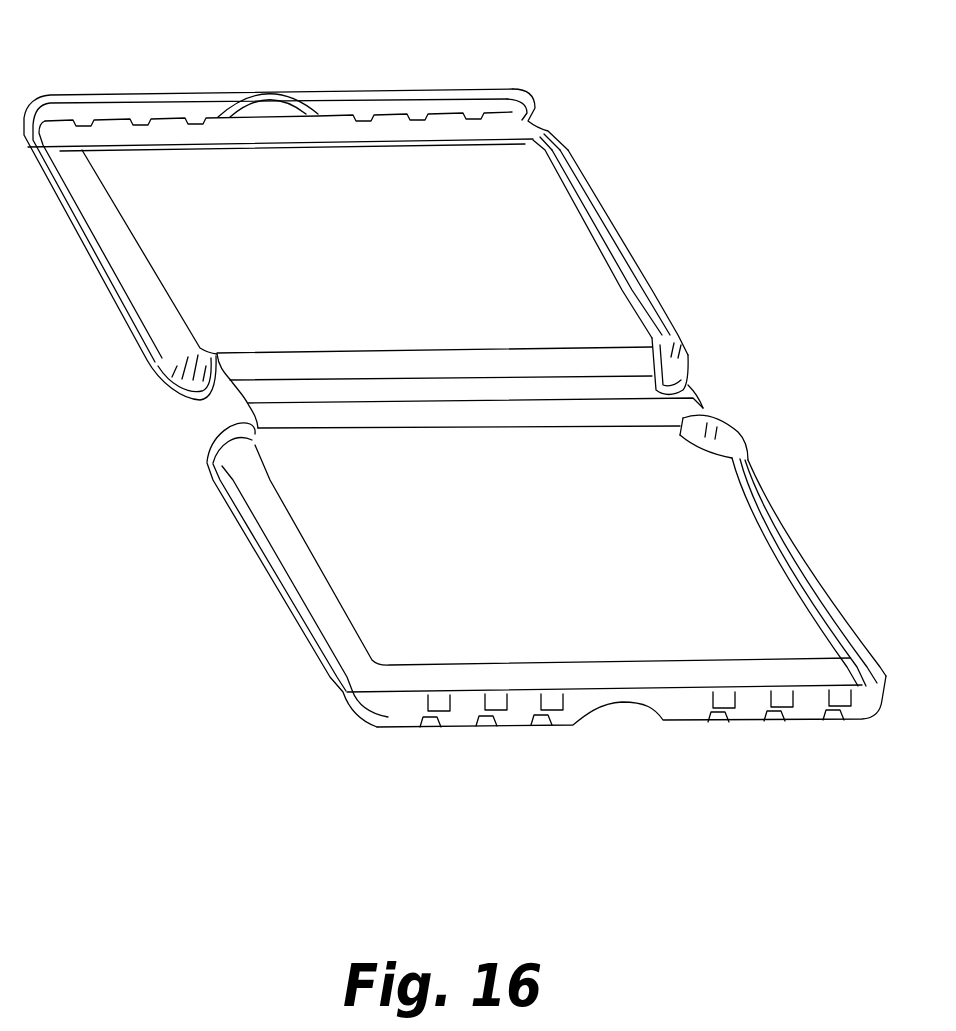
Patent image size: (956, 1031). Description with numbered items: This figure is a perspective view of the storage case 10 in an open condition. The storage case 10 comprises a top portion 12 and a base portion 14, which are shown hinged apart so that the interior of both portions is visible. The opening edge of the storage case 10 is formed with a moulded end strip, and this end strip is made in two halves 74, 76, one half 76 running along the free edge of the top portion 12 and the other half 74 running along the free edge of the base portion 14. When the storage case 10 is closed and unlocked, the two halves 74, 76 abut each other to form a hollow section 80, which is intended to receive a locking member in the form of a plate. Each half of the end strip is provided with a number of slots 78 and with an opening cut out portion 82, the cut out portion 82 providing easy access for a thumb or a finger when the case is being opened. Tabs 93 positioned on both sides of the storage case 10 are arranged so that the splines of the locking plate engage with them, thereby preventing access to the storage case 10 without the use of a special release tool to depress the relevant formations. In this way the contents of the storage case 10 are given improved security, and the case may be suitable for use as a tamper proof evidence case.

The storage case 10 is at (126, 376).
The top portion 12 is at (612, 291).
The base portion 14 is at (718, 633).
The half of the end strip 74 is at (563, 712).
The half of the end strip 76 is at (118, 95).
The slots 78 is at (490, 697).
The hollow section 80 is at (523, 97).
The opening cut out portion 82 is at (287, 93).
The tabs 93 is at (432, 722).